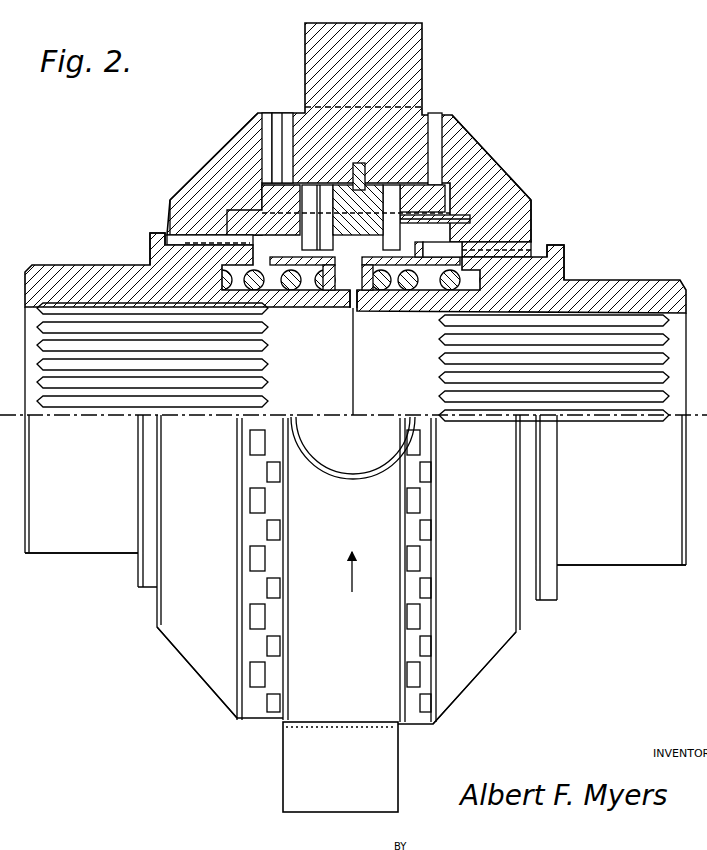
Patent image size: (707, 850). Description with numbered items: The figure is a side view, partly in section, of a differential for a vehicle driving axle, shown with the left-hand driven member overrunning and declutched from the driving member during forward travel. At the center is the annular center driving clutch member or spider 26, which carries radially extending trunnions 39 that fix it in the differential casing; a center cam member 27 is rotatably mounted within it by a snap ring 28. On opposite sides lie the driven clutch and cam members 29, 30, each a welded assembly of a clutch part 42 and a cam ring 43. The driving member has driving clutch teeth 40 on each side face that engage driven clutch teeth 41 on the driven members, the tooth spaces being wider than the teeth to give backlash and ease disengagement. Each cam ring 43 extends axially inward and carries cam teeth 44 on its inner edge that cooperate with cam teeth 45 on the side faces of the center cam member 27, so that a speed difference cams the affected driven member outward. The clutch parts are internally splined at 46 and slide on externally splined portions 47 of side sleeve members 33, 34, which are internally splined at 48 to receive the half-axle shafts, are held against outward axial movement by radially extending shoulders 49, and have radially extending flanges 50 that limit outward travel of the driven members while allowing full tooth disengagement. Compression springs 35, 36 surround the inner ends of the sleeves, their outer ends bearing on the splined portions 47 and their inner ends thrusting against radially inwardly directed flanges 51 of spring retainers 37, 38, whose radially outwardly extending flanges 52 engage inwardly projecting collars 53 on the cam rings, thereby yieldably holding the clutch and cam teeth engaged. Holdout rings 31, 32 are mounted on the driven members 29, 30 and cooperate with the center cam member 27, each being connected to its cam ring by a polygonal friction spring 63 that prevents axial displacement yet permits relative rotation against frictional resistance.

The center driving clutch member 26 is at (366, 114).
The center cam member 27 is at (350, 184).
The snap ring 28 is at (361, 176).
The driven clutch and cam member 29 is at (506, 660).
The driven clutch and cam member 30 is at (163, 640).
The holdout ring 31 is at (464, 200).
The holdout ring 32 is at (263, 187).
The side sleeve member 33 is at (640, 556).
The side sleeve member 34 is at (64, 553).
The compression spring 35 is at (413, 290).
The compression spring 36 is at (290, 292).
The spring retainer 37 is at (390, 266).
The spring retainer 38 is at (308, 266).
The trunnions 39 is at (418, 41).
The driving clutch teeth 40 is at (288, 120).
The driven clutch teeth 41 is at (270, 118).
The clutch part 42 is at (233, 152).
The cam ring 43 is at (273, 195).
The cam teeth 44 is at (308, 228).
The cam teeth 45 is at (327, 222).
The internal splines 46 is at (175, 240).
The externally splined portions 47 is at (193, 256).
The internal splines 48 is at (95, 385).
The radially extending shoulders 49 is at (145, 249).
The radially extending flanges 50 is at (156, 235).
The radially inwardly directed flanges 51 is at (366, 279).
The radially outwardly extending flanges 52 is at (427, 253).
The collars 53 is at (406, 247).
The friction spring 63 is at (439, 222).